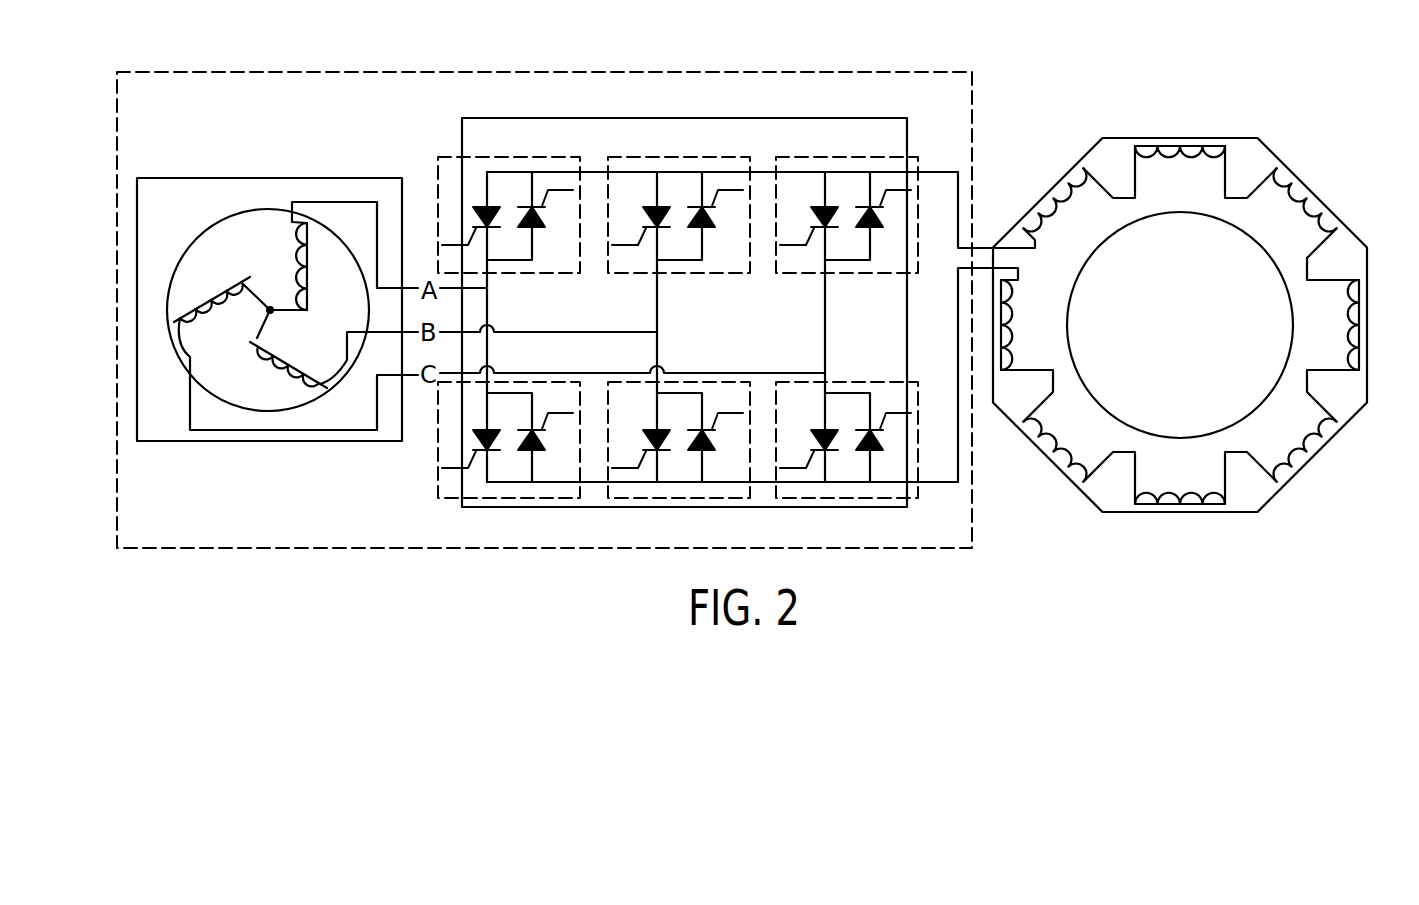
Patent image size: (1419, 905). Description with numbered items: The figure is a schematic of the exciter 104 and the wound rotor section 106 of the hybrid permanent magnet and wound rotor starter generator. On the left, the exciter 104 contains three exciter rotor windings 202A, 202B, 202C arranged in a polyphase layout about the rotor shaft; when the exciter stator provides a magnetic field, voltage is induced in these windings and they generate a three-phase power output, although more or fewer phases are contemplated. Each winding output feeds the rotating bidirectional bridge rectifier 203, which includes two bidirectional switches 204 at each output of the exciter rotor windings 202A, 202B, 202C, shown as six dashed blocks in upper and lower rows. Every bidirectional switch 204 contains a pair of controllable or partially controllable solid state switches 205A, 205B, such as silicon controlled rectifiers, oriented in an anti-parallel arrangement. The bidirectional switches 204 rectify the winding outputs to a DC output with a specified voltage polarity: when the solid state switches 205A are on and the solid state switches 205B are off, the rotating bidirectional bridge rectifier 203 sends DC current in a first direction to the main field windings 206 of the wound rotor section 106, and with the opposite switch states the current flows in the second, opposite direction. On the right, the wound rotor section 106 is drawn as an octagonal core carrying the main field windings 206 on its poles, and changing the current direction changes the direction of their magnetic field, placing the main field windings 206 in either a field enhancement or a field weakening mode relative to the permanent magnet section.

The exciter 104 is at (545, 72).
The rotating bidirectional bridge rectifier 203 is at (795, 118).
The bidirectional switch 204 is at (510, 274).
The solid state switch 205A is at (481, 192).
The solid state switch 205B is at (537, 230).
The exciter rotor winding 202A is at (278, 240).
The exciter rotor winding 202B is at (282, 381).
The exciter rotor winding 202C is at (203, 283).
The wound rotor section 106 is at (1177, 82).
The main field windings 206 is at (1050, 196).